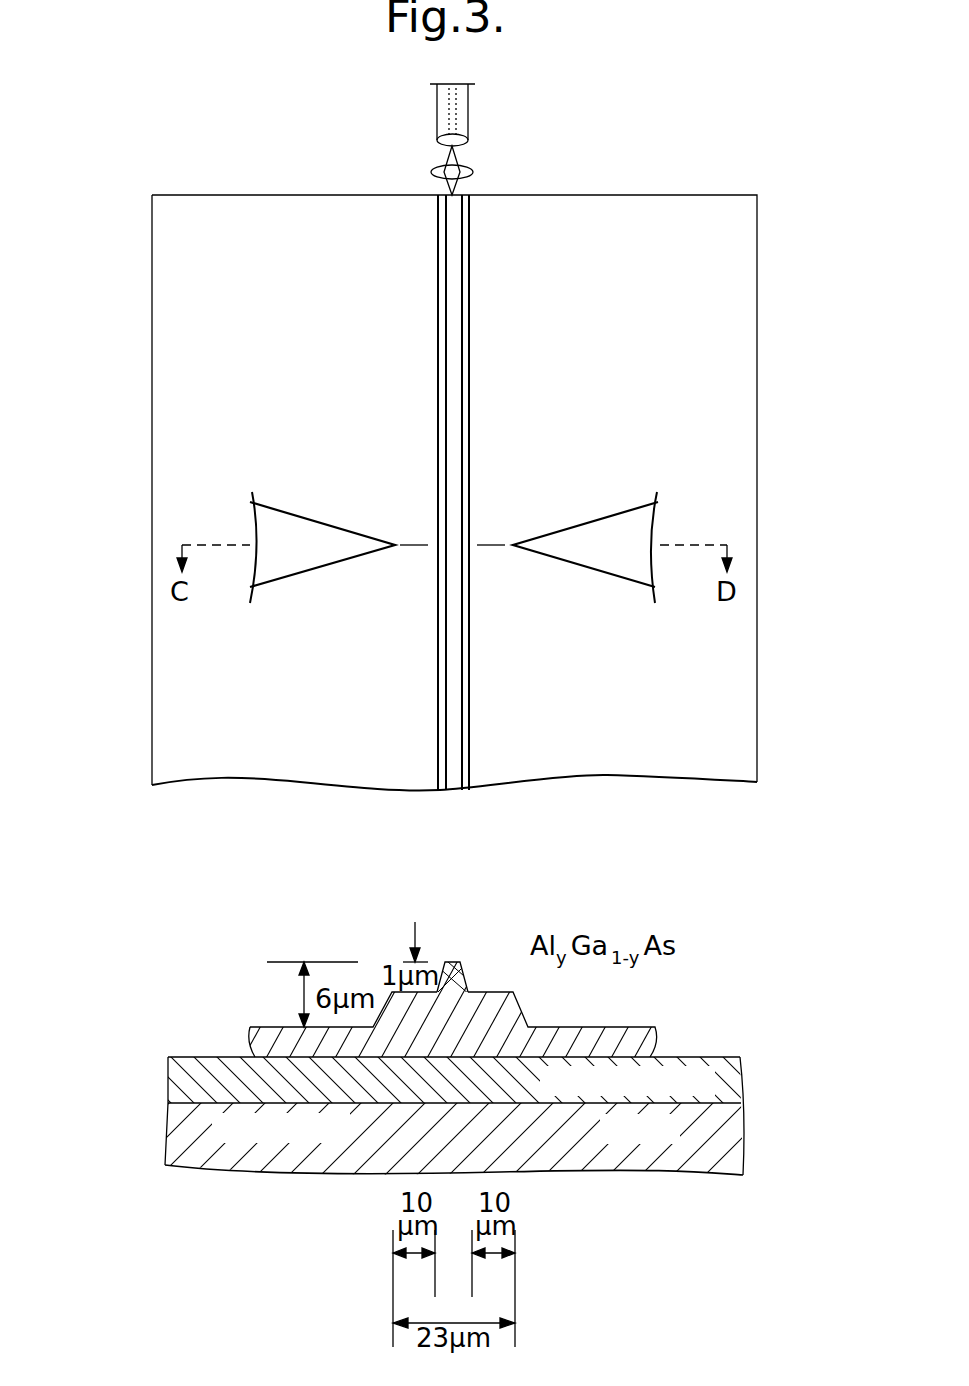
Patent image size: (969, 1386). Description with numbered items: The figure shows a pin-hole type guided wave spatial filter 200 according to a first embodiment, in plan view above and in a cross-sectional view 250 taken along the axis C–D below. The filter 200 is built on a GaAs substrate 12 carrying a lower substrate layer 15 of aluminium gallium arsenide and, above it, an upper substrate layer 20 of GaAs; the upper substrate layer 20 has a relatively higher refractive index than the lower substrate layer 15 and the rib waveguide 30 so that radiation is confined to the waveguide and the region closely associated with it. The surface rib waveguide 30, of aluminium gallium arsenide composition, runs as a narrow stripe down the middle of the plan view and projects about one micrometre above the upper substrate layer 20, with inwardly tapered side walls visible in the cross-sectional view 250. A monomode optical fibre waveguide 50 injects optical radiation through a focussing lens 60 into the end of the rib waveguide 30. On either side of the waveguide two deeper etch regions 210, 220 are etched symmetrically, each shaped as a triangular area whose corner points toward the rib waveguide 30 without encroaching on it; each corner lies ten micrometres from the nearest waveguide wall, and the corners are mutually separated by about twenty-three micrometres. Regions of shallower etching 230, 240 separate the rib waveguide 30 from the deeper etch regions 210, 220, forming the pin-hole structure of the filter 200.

The GaAs substrate 12 is at (741, 1120).
The lower substrate layer 15 is at (741, 1080).
The upper substrate layer 20 is at (263, 370).
The surface rib waveguide 30 is at (453, 277).
The monomode optical fibre waveguide 50 is at (466, 107).
The focussing lens 60 is at (470, 170).
The pin-hole type guided wave spatial filter 200 is at (553, 470).
The deeper etch region 210 is at (322, 560).
The deeper etch region 220 is at (639, 560).
The shallower etching region 230 is at (409, 548).
The shallower etching region 240 is at (492, 548).
The cross-sectional view 250 is at (462, 1034).